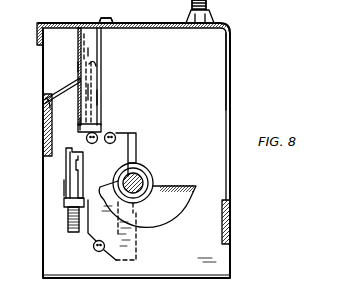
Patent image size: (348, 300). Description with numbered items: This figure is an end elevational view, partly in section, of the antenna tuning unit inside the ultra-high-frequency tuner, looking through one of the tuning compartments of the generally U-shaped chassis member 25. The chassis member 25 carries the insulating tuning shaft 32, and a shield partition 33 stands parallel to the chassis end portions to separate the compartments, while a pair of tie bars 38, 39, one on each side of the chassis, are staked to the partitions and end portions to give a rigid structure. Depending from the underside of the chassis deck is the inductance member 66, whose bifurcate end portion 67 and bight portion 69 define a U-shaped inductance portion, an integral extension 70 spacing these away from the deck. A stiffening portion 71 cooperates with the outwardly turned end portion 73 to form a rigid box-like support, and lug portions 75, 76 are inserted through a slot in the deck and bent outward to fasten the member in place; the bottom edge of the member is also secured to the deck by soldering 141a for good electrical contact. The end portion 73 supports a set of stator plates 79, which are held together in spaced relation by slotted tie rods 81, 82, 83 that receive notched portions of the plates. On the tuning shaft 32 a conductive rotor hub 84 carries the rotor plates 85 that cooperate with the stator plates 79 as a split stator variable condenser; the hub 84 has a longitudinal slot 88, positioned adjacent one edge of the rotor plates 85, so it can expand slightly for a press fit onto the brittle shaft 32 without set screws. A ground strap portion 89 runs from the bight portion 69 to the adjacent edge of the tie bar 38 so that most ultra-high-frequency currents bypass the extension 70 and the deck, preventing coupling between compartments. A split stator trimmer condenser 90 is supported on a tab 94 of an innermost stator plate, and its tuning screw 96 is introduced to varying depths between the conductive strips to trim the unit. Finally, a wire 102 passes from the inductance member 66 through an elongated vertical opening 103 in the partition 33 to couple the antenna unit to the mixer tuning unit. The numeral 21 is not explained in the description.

The terminal post 21 is at (148, 26).
The chassis member 25 is at (236, 32).
The tuning shaft 32 is at (132, 184).
The partition 33 is at (231, 78).
The tie bar 38 is at (44, 149).
The tie bar 39 is at (230, 218).
The inductance member 66 is at (103, 45).
The bifurcate end portion 67 is at (101, 96).
The bight portion 69 is at (77, 67).
The integral extension 70 is at (88, 44).
The stiffening portion 71 is at (90, 50).
The outwardly turned end portion 73 is at (80, 125).
The lug portion 75 is at (106, 21).
The lug portion 76 is at (80, 23).
The stator plates 79 is at (137, 139).
The tie rod 81 is at (96, 134).
The tie rod 82 is at (113, 134).
The tie rod 83 is at (97, 251).
The rotor hub 84 is at (141, 173).
The rotor plates 85 is at (166, 220).
The longitudinal slot 88 is at (160, 183).
The ground strap portion 89 is at (46, 99).
The split stator trimmer condenser 90 is at (66, 186).
The tab 94 is at (79, 167).
The tuning screw 96 is at (65, 211).
The wire 102 is at (118, 82).
The opening 103 is at (97, 63).
The soldering 141a is at (86, 44).